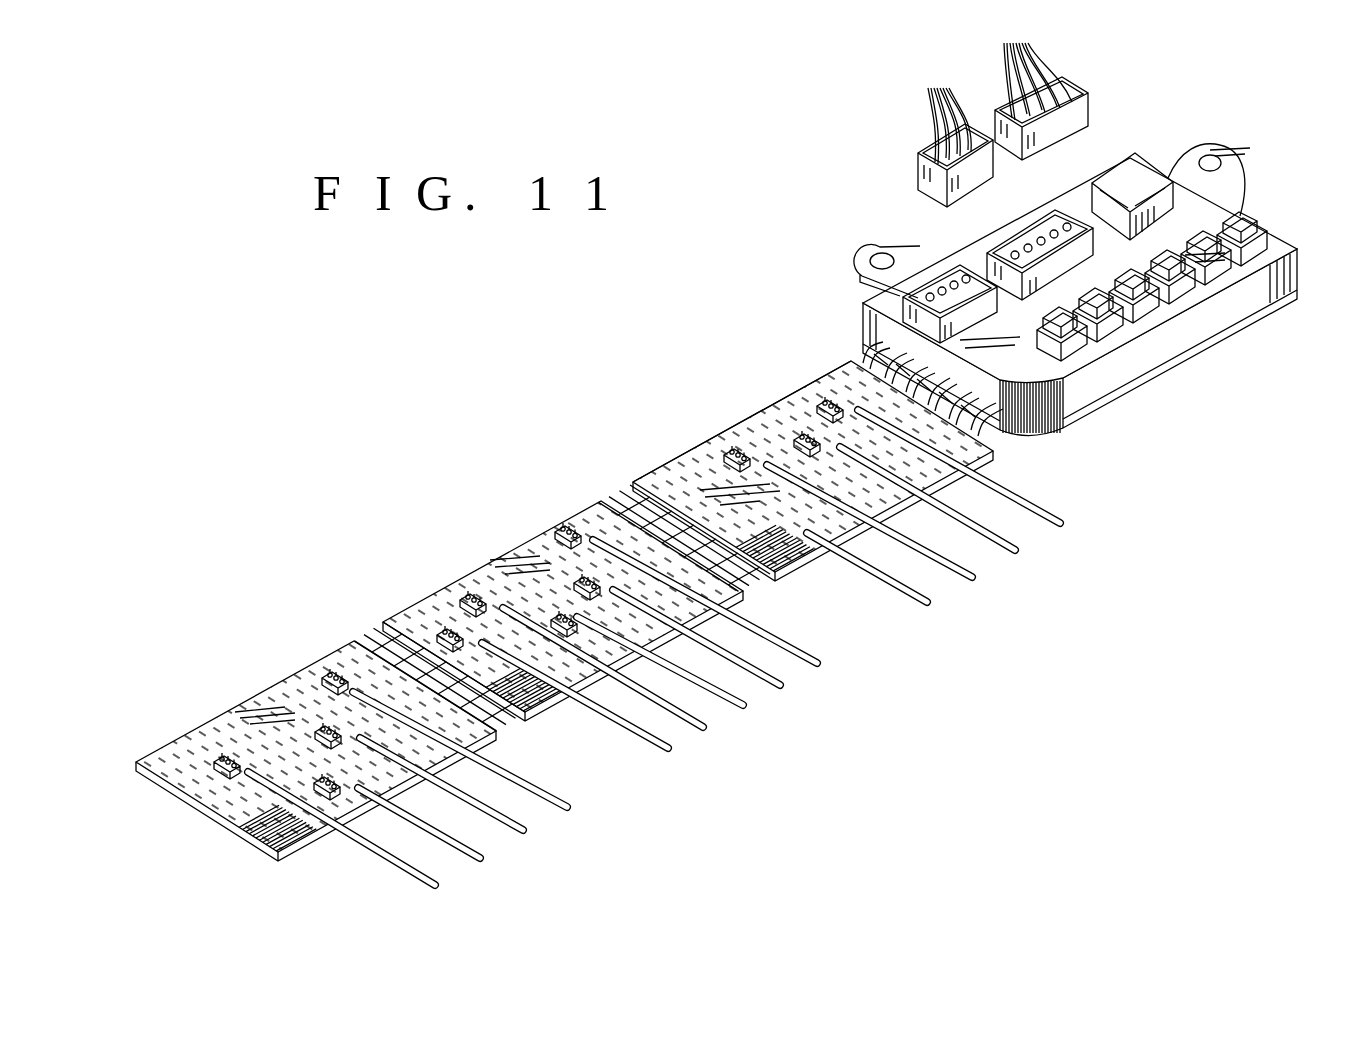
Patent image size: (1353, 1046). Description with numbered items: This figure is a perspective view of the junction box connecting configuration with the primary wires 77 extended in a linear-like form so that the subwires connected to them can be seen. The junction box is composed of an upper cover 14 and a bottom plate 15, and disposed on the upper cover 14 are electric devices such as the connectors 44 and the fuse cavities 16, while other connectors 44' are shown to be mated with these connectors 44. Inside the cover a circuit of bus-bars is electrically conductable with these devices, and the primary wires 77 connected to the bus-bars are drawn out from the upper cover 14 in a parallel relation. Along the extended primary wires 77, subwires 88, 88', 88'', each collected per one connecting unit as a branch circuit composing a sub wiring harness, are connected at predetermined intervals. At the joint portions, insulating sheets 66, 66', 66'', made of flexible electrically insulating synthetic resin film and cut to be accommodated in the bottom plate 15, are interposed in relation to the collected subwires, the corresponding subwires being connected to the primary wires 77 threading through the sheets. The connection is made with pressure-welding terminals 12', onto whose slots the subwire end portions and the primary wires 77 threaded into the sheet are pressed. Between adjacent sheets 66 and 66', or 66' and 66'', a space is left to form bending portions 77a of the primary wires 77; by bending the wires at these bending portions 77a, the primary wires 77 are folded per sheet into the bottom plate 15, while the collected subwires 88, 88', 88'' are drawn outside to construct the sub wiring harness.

The pressure-welding terminal 12' is at (731, 421).
The upper cover 14 is at (1219, 317).
The bottom plate 15 is at (1130, 390).
The fuse cavities 16 is at (1279, 176).
The connectors 44 is at (971, 267).
The other connectors 44' is at (1055, 125).
The insulating sheet 66 is at (813, 459).
The insulating sheet 66' is at (563, 592).
The insulating sheet 66'' is at (316, 734).
The primary wires 77 is at (862, 357).
The bending portions 77a is at (613, 486).
The subwires 88 is at (950, 506).
The subwires 88' is at (695, 644).
The subwires 88'' is at (442, 794).